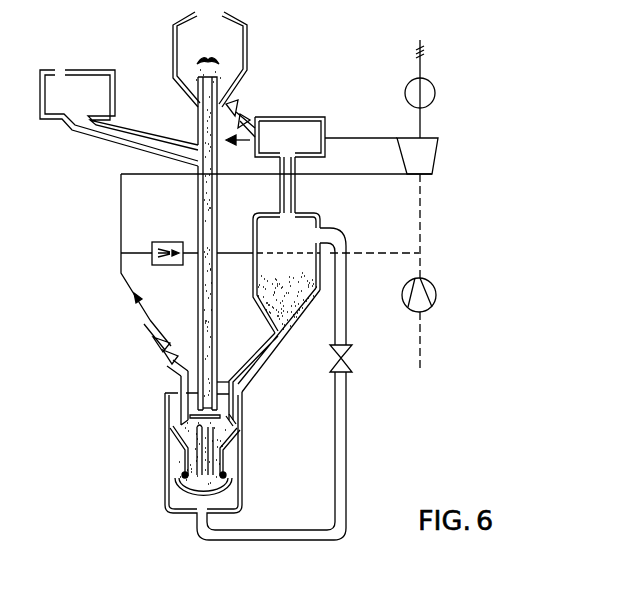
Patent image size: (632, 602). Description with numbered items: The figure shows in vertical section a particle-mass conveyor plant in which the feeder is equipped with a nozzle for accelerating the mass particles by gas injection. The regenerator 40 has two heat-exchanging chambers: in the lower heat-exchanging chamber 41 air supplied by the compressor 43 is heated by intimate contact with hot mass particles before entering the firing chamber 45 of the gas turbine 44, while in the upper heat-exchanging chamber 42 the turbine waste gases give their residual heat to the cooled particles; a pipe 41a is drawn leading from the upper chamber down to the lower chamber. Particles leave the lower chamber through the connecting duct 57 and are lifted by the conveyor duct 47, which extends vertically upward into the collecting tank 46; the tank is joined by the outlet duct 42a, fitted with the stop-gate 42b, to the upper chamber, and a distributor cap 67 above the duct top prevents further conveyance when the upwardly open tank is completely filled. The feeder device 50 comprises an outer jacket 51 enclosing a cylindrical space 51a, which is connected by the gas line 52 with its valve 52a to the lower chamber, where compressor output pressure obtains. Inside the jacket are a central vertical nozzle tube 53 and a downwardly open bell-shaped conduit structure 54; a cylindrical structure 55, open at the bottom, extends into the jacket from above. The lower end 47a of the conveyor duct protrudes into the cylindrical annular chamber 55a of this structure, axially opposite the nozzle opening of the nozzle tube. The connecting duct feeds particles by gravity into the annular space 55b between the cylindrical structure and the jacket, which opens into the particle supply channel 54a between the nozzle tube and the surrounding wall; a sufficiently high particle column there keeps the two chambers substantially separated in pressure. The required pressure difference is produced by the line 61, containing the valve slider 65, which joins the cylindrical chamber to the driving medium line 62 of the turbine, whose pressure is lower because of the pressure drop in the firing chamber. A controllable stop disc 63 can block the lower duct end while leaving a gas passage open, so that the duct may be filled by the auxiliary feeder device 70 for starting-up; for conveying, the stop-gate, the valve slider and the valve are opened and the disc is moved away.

The regenerator 40 is at (351, 215).
The lower heat-exchanging chamber 41 is at (263, 230).
The connecting pipe 41a is at (292, 185).
The upper heat-exchanging chamber 42 is at (320, 130).
The outlet duct 42a is at (248, 126).
The stop-gate 42b is at (234, 108).
The compressor 43 is at (435, 290).
The gas turbine 44 is at (428, 147).
The firing chamber 45 is at (170, 242).
The collecting tank 46 is at (173, 43).
The conveyor duct 47 is at (218, 266).
The lower end of conveyor duct 47a is at (230, 398).
The feeder device 50 is at (243, 448).
The outer jacket 51 is at (235, 467).
The cylindrical space 51a is at (228, 500).
The gas line 52 is at (345, 389).
The valve 52a is at (350, 349).
The nozzle tube 53 is at (199, 455).
The bell-shaped conduit structure 54 is at (209, 462).
The particle supply channel 54a is at (188, 474).
The cylindrical structure 55 is at (172, 393).
The cylindrical annular chamber 55a is at (188, 412).
The annular space 55b is at (222, 417).
The connecting duct 57 is at (270, 352).
The line 61 is at (170, 366).
The driving medium line 62 is at (121, 207).
The stop disc 63 is at (233, 421).
The valve slider 65 is at (155, 345).
The distributor cap 67 is at (208, 57).
The auxiliary feeder device 70 is at (86, 85).